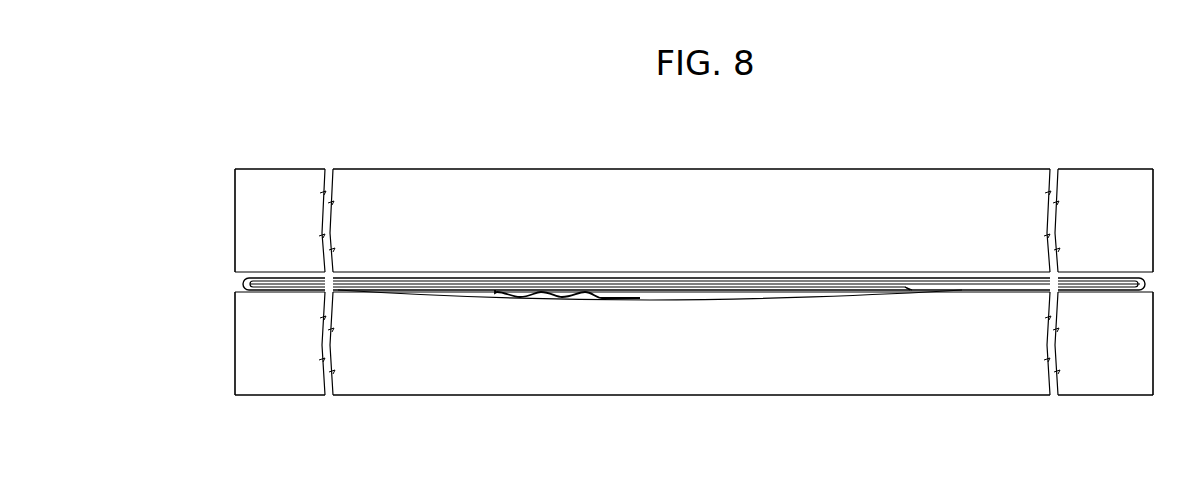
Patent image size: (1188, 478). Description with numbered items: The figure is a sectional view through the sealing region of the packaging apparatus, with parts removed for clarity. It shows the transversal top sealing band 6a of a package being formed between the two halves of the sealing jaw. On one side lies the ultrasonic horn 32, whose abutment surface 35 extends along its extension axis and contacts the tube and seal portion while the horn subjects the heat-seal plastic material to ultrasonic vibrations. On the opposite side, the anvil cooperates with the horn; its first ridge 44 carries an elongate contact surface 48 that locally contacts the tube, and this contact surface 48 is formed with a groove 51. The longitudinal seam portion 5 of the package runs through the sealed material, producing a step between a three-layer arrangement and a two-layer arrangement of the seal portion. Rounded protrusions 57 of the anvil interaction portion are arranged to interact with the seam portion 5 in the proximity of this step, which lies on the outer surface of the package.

The ultrasonic horn 32 is at (977, 165).
The first ridge 44 is at (928, 375).
The transversal top sealing band 6a is at (242, 284).
The elongate contact surface 48 is at (392, 295).
The groove 51 is at (732, 298).
The longitudinal seam portion 5 is at (660, 290).
The rounded protrusions 57 is at (583, 296).
The abutment surface 35 is at (990, 272).